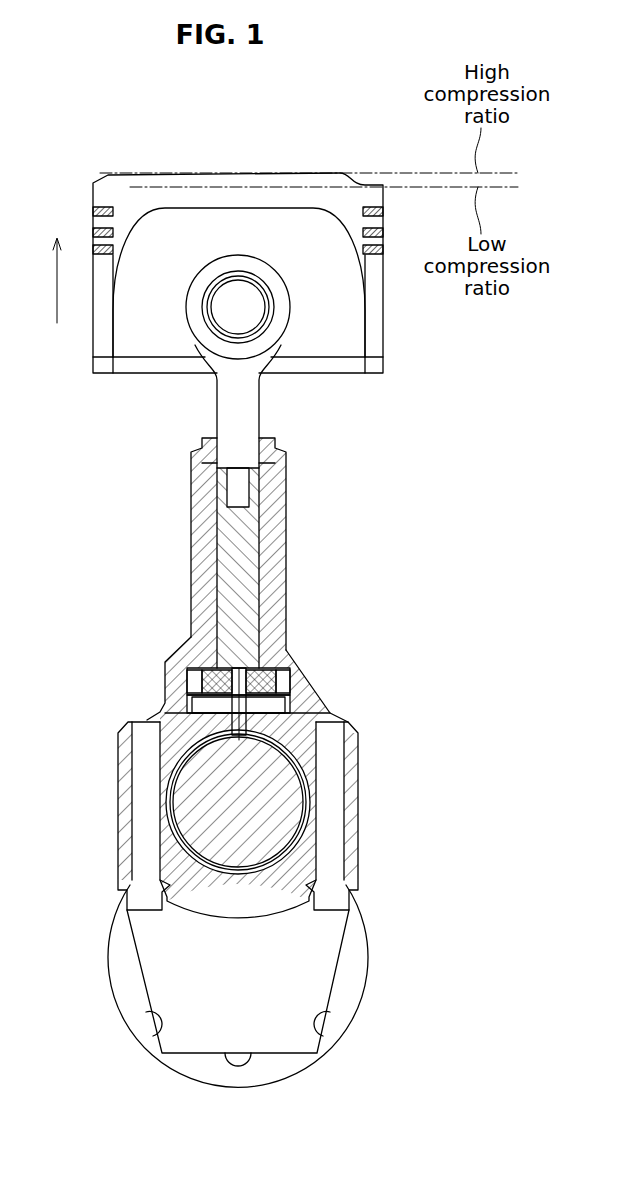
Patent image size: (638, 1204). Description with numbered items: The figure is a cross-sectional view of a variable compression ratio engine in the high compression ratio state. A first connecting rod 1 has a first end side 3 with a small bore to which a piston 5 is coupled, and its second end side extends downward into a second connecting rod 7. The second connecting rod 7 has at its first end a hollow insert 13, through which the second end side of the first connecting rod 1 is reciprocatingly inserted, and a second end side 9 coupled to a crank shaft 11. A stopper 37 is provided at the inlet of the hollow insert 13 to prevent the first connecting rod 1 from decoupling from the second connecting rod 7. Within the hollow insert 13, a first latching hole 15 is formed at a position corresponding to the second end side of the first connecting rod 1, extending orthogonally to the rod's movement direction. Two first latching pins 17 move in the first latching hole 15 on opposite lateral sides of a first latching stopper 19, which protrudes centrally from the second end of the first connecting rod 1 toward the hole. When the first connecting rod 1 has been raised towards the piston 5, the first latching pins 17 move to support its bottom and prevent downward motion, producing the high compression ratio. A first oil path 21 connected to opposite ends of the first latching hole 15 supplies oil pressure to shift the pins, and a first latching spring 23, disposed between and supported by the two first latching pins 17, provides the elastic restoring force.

The first connecting rod 1 is at (223, 586).
The first end side 3 is at (285, 310).
The piston 5 is at (383, 357).
The second connecting rod 7 is at (302, 620).
The second end side 9 is at (286, 892).
The crank shaft 11 is at (366, 990).
The hollow insert 13 is at (283, 537).
The first latching hole 15 is at (187, 686).
The first latching pin 17 is at (205, 680).
The first latching stopper 19 is at (247, 670).
The first oil path 21 is at (292, 703).
The first latching spring 23 is at (348, 728).
The stopper 37 is at (276, 460).